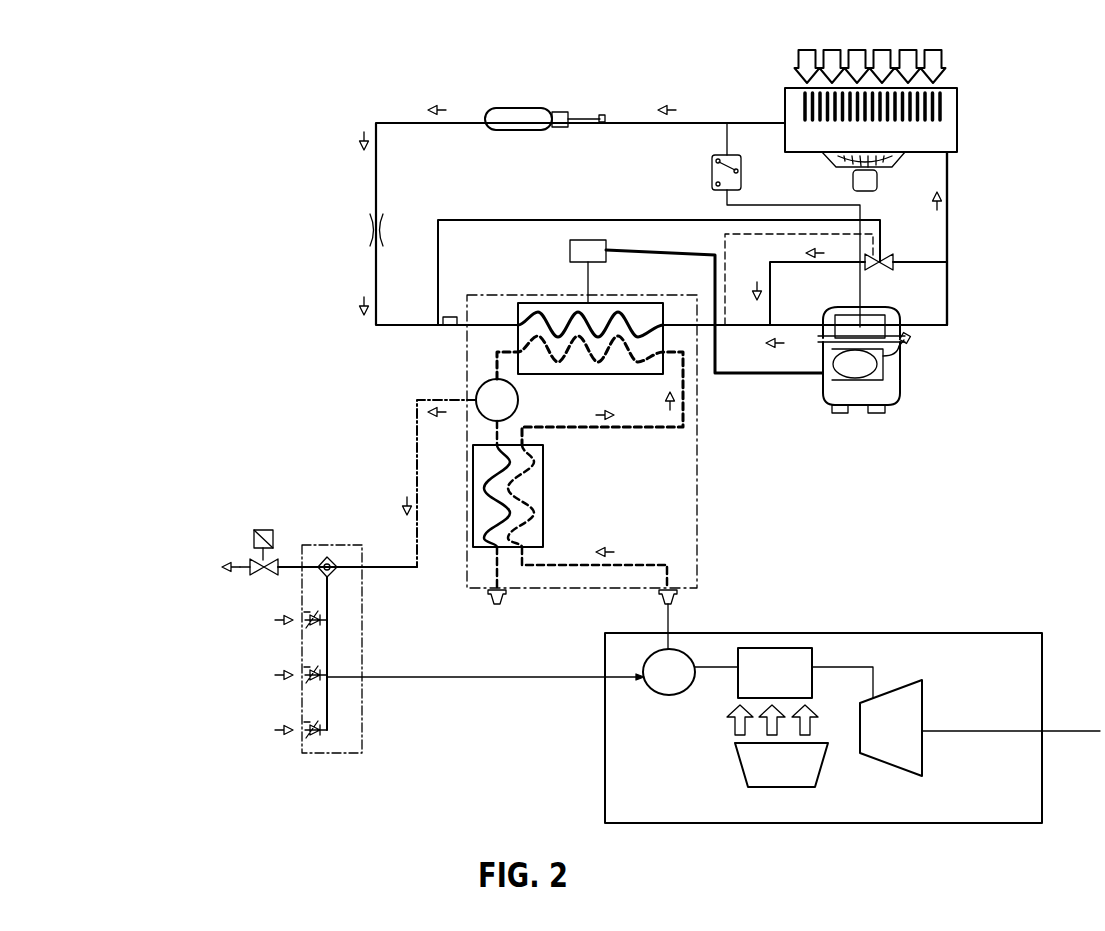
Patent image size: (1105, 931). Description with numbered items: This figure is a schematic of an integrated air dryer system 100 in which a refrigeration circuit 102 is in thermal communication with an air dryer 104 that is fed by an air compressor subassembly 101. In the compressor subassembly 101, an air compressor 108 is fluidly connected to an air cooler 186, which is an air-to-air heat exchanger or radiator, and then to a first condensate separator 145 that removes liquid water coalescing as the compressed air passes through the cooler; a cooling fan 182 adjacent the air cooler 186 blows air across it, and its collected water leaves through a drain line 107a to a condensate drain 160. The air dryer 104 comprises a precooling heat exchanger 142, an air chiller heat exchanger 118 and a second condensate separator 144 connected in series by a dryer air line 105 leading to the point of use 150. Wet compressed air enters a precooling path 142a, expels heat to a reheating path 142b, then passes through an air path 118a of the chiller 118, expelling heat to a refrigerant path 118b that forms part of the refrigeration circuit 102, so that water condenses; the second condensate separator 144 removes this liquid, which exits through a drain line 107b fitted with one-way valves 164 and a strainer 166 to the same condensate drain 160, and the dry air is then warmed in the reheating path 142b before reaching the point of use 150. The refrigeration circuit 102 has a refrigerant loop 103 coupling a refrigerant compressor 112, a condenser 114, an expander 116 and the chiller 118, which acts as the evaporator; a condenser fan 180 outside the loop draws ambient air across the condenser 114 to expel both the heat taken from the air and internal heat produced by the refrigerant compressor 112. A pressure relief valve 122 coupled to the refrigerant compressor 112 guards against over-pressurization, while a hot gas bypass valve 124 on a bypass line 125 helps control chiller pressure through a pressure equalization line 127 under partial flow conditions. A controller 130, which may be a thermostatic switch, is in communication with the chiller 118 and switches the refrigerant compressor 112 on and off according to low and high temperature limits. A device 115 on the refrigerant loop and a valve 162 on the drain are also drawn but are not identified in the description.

The integrated air dryer system 100 is at (157, 157).
The air compressor subassembly 101 is at (1010, 633).
The refrigeration circuit 102 is at (343, 107).
The refrigerant loop 103 is at (949, 216).
The air dryer 104 is at (722, 568).
The dryer air line 105 is at (646, 566).
The drain line 107a is at (438, 678).
The drain line 107b is at (416, 446).
The air compressor 108 is at (905, 683).
The refrigerant compressor 112 is at (902, 384).
The condenser 114 is at (958, 110).
The temperature sensor 115 is at (498, 106).
The expander 116 is at (368, 226).
The air chiller heat exchanger 118 is at (668, 337).
The air path 118a is at (642, 342).
The refrigerant path 118b is at (658, 368).
The pressure relief valve 122 is at (718, 153).
The hot gas bypass valve 124 is at (884, 258).
The bypass line 125 is at (928, 264).
The pressure equalization line 127 is at (800, 263).
The controller 130 is at (590, 240).
The precooling heat exchanger 142 is at (477, 498).
The precooling path 142a is at (514, 523).
The reheating path 142b is at (481, 528).
The second condensate separator 144 is at (478, 390).
The first condensate separator 145 is at (690, 652).
The point of use 150 is at (500, 606).
The condensate drain 160 is at (338, 542).
The shut-off valve 162 is at (263, 577).
The one-way valves 164 is at (310, 731).
The strainer 166 is at (320, 557).
The condenser fan 180 is at (903, 165).
The cooling fan 182 is at (818, 770).
The air cooler 186 is at (812, 648).